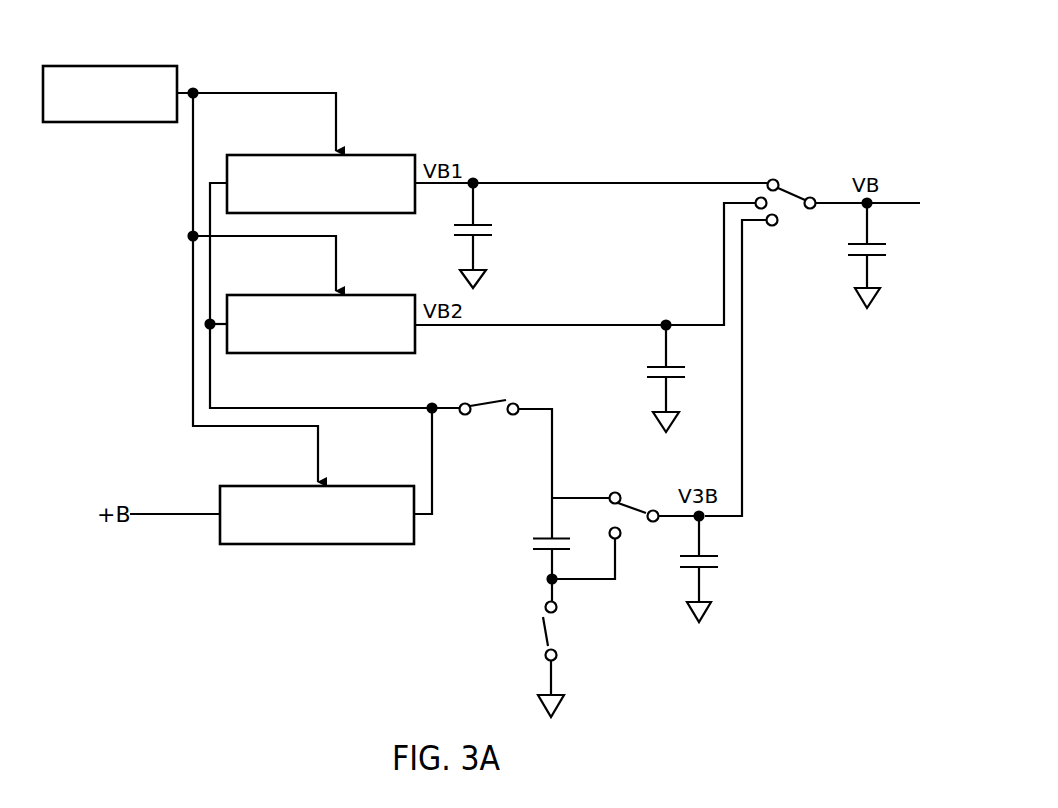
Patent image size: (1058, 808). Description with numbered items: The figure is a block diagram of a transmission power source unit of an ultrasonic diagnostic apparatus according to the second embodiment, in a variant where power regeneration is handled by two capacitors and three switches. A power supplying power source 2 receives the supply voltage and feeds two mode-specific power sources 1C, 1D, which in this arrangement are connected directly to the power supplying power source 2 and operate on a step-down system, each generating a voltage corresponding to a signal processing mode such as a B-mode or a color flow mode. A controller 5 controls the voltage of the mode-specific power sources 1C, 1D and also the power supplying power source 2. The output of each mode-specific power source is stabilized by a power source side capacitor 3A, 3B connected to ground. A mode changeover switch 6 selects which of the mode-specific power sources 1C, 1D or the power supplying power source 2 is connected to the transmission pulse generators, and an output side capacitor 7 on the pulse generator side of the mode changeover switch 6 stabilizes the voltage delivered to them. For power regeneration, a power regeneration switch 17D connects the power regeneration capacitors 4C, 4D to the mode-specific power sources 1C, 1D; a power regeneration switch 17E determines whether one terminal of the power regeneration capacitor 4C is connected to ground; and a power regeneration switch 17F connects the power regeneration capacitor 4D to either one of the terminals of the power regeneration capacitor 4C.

The controller 5 is at (152, 66).
The mode-specific power source 1C is at (372, 155).
The mode-specific power source 1D is at (371, 295).
The power supplying power source 2 is at (372, 486).
The power source side capacitor 3A is at (453, 230).
The power source side capacitor 3B is at (647, 368).
The power regeneration capacitor 4C is at (568, 545).
The power regeneration capacitor 4D is at (680, 562).
The mode changeover switch 6 is at (788, 186).
The output side capacitor 7 is at (845, 250).
The power regeneration switch 17D is at (490, 403).
The power regeneration switch 17E is at (537, 630).
The power regeneration switch 17F is at (633, 505).